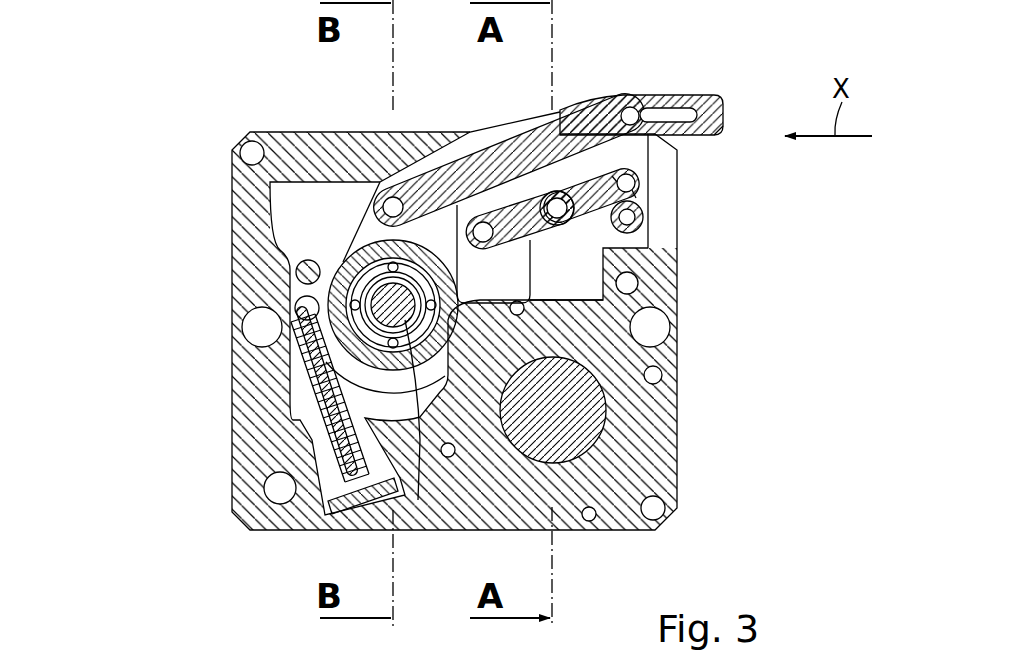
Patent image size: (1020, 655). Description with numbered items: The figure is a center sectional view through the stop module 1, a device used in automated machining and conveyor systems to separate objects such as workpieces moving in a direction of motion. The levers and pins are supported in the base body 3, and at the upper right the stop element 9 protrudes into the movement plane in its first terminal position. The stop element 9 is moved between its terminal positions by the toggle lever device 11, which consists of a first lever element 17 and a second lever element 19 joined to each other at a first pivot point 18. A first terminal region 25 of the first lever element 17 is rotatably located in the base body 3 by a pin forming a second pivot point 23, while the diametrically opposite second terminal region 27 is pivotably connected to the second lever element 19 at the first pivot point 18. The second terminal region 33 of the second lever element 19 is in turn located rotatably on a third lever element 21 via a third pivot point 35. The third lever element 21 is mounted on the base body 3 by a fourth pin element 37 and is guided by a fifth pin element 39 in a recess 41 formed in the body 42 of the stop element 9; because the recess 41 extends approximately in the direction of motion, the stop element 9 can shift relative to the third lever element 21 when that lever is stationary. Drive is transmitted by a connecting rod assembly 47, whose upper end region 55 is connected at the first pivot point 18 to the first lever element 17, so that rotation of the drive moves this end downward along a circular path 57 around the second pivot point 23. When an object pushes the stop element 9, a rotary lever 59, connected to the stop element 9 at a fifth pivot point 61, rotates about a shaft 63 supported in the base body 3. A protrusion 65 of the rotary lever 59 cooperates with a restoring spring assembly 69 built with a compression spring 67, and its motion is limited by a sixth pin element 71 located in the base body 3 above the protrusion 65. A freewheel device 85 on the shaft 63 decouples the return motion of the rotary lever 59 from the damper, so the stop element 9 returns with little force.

The stop module 1 is at (143, 93).
The base body 3 is at (269, 126).
The stop element 9 is at (685, 90).
The toggle lever device 11 is at (508, 193).
The first lever element 17 is at (493, 254).
The first pivot point 18 is at (538, 186).
The second lever element 19 is at (612, 176).
The third lever element 21 is at (628, 143).
The second pivot point 23 is at (481, 222).
The first terminal region 25 is at (440, 188).
The second terminal region 27 is at (554, 191).
The second terminal region 33 is at (632, 170).
The third pivot point 35 is at (632, 190).
The fourth pin element 37 is at (643, 212).
The fifth pin element 39 is at (631, 106).
The recess 41 is at (705, 100).
The body 42 is at (712, 118).
The connecting rod assembly 47 is at (570, 288).
The upper end region 55 is at (613, 227).
The circular path 57 is at (560, 294).
The rotary lever 59 is at (375, 231).
The fifth pivot point 61 is at (395, 190).
The shaft 63 is at (393, 305).
The protrusion 65 is at (298, 307).
The compression spring 67 is at (320, 403).
The spring assembly 69 is at (316, 433).
The sixth pin element 71 is at (298, 268).
The freewheel device 85 is at (418, 500).